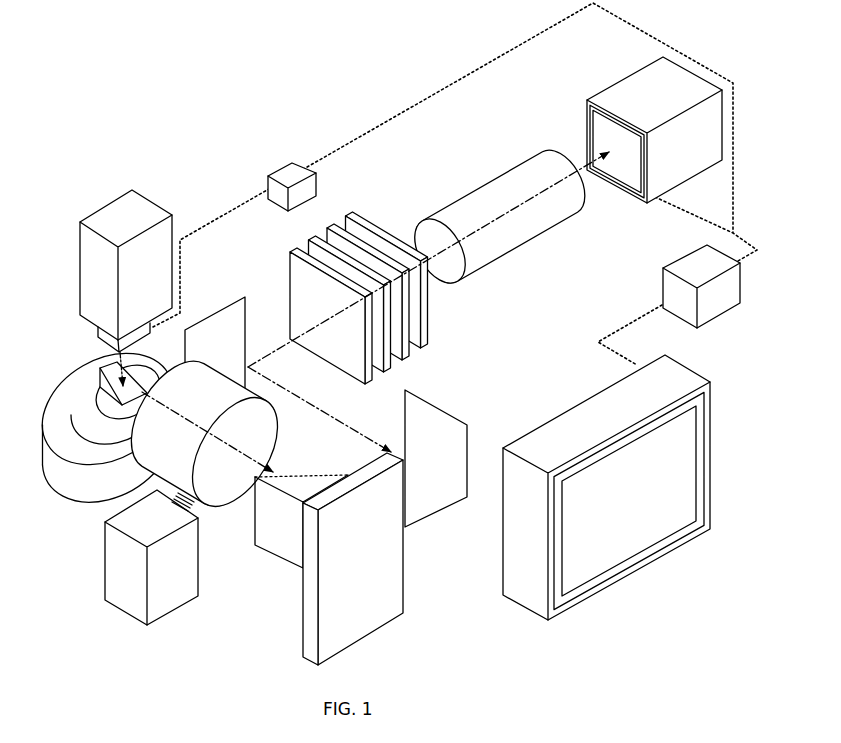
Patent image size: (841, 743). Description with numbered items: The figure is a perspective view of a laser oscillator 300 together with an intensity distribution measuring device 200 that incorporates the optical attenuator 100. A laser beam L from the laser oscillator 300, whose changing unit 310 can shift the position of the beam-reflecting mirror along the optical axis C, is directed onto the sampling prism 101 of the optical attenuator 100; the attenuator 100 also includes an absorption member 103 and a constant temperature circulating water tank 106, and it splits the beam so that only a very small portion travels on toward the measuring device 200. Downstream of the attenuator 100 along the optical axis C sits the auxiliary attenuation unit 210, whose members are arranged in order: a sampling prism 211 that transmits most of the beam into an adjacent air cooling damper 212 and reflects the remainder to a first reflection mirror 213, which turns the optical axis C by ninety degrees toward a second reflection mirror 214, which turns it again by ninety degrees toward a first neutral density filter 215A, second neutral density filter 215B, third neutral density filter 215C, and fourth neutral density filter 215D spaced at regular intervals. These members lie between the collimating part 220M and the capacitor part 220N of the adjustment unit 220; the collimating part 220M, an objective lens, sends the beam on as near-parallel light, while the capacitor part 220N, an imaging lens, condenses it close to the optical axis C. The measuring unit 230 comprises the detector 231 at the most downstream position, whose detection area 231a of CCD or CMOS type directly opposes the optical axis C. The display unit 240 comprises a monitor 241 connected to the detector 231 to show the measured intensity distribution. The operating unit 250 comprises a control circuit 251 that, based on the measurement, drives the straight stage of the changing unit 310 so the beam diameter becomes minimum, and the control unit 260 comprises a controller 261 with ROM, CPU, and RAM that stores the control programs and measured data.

The optical attenuator 100 is at (110, 481).
The sampling prism 101 is at (88, 398).
The absorption member 103 is at (97, 493).
The constant temperature circulating water tank 106 is at (112, 576).
The intensity distribution measuring device 200 is at (347, 88).
The auxiliary attenuation unit 210 is at (370, 527).
The sampling prism 211 is at (305, 483).
The air cooling damper 212 is at (393, 540).
The first reflection mirror 213 is at (438, 498).
The second reflection mirror 214 is at (233, 313).
The first neutral density filter 215A is at (374, 380).
The second neutral density filter 215B is at (392, 358).
The third neutral density filter 215C is at (409, 338).
The fourth neutral density filter 215D is at (428, 323).
The adjustment unit 220 is at (357, 371).
The collimating part 220M is at (213, 493).
The capacitor part 220N is at (525, 235).
The measuring unit 230 is at (627, 118).
The detector 231 is at (627, 118).
The detection area 231a is at (597, 140).
The display unit 240 is at (595, 487).
The monitor 241 is at (582, 415).
The operating unit 250 is at (264, 168).
The control circuit 251 is at (295, 167).
The control unit 260 is at (676, 275).
The controller 261 is at (700, 263).
The laser oscillator 300 is at (107, 254).
The changing unit 310 is at (95, 333).
The laser beam L is at (128, 355).
The optical axis C is at (300, 393).